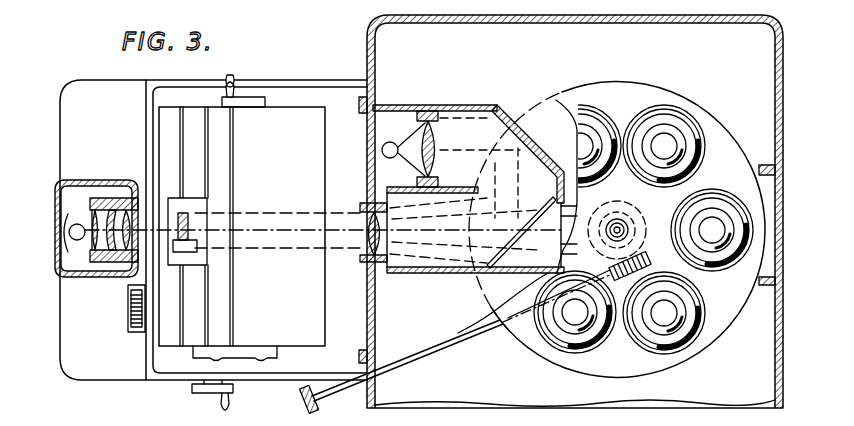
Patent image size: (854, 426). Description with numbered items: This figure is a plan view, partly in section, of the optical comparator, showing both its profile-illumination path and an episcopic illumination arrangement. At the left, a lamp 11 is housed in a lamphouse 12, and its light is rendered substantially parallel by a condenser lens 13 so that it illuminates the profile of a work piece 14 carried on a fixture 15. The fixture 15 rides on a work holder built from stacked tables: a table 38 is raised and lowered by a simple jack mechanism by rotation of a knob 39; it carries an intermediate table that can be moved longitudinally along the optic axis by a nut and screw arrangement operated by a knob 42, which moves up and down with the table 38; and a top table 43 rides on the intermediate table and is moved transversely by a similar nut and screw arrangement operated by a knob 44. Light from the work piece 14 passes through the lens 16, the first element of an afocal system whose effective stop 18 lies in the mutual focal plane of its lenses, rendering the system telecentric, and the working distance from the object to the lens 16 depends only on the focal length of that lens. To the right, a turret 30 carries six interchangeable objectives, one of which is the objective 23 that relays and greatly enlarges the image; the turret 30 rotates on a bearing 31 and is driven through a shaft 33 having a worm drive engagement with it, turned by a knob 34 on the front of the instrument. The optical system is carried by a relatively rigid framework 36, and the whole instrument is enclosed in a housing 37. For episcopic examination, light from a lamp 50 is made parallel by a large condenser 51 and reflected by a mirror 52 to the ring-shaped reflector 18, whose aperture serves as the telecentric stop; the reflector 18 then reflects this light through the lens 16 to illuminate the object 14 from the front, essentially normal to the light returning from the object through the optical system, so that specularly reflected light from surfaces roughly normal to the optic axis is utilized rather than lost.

The lamp 11 is at (77, 240).
The lamphouse 12 is at (56, 268).
The condenser lens 13 is at (108, 200).
The work piece 14 is at (189, 222).
The fixture 15 is at (205, 203).
The lens 16 is at (365, 207).
The ring-shaped reflector 18 is at (500, 258).
The objective 23 is at (716, 240).
The turret 30 is at (602, 376).
The bearing 31 is at (625, 224).
The shaft 33 is at (435, 352).
The knob 34 is at (300, 404).
The framework 36 is at (767, 286).
The housing 37 is at (781, 362).
The table 38 is at (170, 367).
The knob 39 is at (199, 393).
The knob 42 is at (128, 316).
The top table 43 is at (278, 115).
The knob 44 is at (250, 96).
The lamp 50 is at (390, 141).
The large condenser 51 is at (434, 118).
The mirror 52 is at (494, 127).